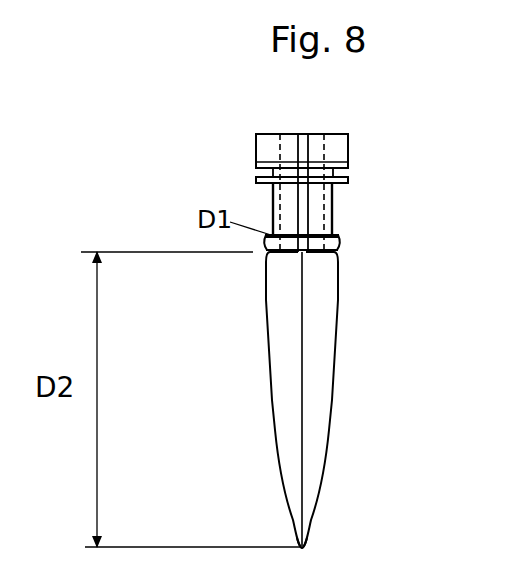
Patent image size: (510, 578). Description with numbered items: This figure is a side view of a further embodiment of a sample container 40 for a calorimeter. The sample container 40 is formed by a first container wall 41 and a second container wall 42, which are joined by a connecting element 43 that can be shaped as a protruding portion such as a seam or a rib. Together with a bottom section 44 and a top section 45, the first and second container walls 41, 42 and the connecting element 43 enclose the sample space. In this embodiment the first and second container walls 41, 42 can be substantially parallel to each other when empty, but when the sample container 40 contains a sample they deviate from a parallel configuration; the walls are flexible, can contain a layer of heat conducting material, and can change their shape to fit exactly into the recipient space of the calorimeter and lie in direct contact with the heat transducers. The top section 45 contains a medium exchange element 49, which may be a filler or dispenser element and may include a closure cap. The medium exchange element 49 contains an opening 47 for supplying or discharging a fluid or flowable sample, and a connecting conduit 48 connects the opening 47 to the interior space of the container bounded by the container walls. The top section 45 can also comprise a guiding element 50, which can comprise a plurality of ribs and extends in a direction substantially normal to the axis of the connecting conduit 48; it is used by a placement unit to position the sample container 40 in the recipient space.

The sample container 40 is at (172, 152).
The first container wall 41 is at (333, 380).
The second container wall 42 is at (268, 382).
The connecting element 43 is at (302, 292).
The bottom section 44 is at (333, 524).
The top section 45 is at (252, 128).
The opening 47 is at (310, 135).
The connecting conduit 48 is at (324, 217).
The medium exchange element 49 is at (309, 112).
The guiding element 50 is at (343, 178).